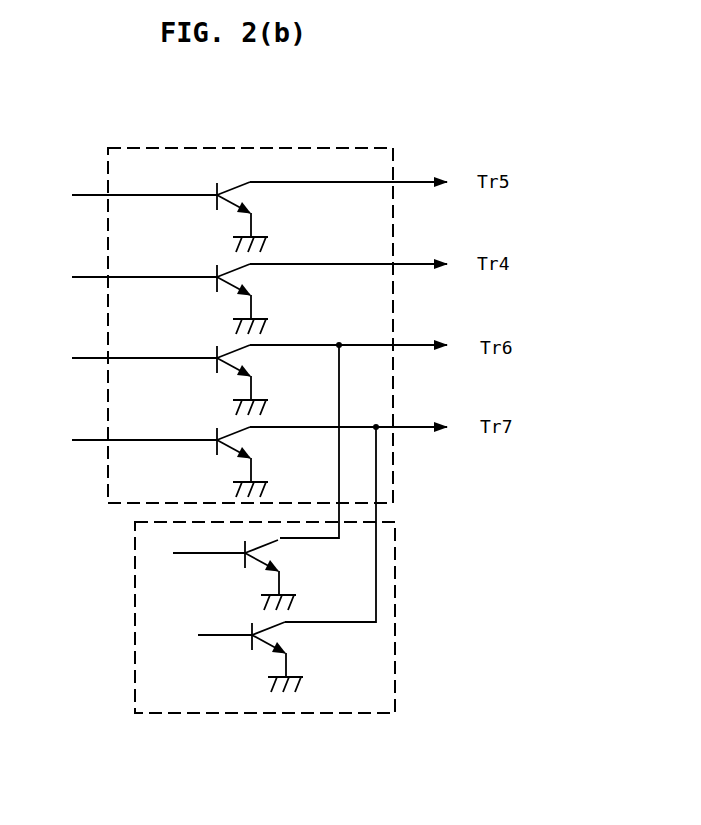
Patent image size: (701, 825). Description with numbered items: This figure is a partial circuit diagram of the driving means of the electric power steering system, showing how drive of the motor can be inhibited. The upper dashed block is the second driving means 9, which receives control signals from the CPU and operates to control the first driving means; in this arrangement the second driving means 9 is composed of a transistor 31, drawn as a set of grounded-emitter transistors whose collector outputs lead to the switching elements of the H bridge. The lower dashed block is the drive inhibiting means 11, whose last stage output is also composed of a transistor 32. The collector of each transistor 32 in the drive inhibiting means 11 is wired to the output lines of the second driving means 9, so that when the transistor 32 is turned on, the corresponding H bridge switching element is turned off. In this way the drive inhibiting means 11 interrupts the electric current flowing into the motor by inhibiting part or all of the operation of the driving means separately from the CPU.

The second driving means 9 is at (348, 148).
The drive inhibiting means 11 is at (395, 617).
The transistor 31 is at (217, 190).
The transistor 32 is at (252, 638).